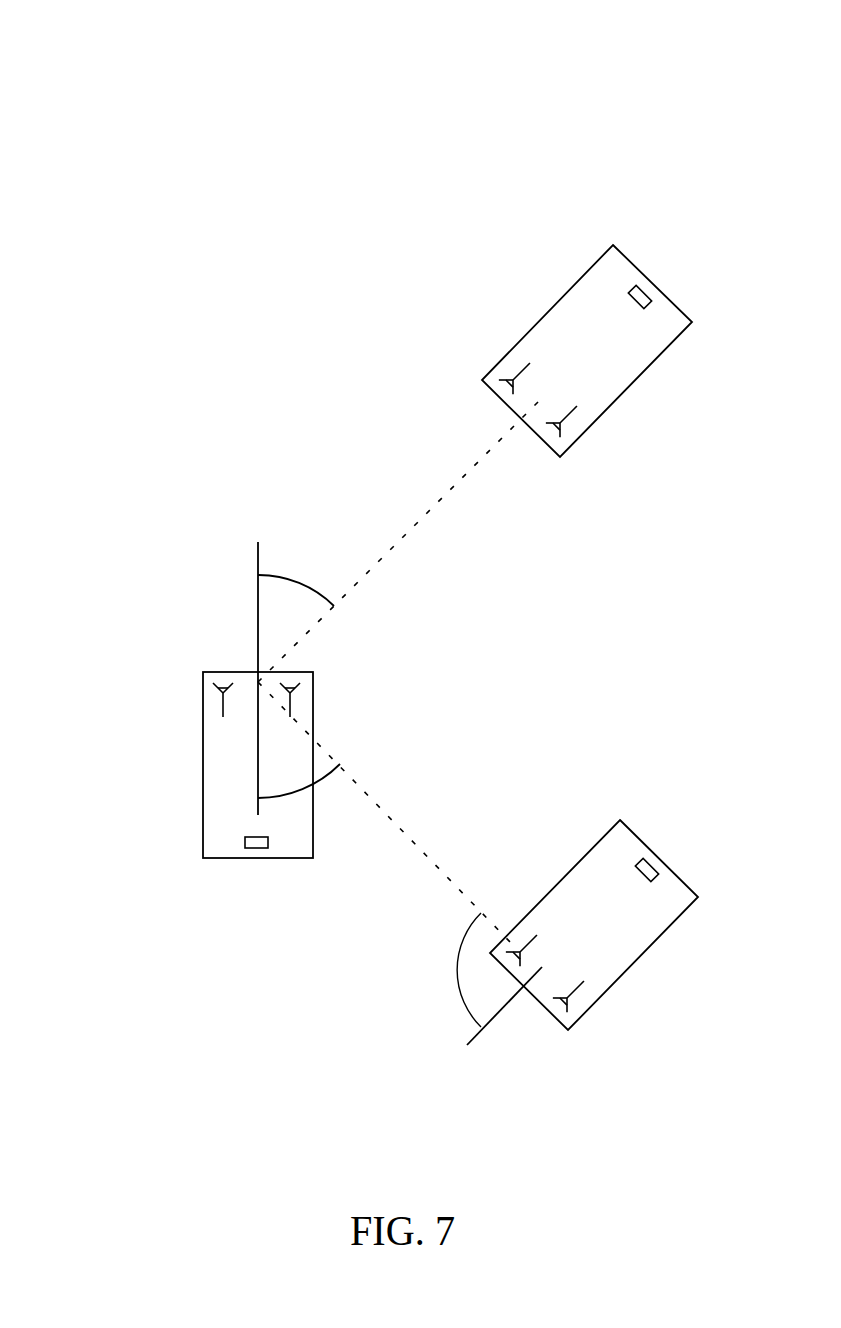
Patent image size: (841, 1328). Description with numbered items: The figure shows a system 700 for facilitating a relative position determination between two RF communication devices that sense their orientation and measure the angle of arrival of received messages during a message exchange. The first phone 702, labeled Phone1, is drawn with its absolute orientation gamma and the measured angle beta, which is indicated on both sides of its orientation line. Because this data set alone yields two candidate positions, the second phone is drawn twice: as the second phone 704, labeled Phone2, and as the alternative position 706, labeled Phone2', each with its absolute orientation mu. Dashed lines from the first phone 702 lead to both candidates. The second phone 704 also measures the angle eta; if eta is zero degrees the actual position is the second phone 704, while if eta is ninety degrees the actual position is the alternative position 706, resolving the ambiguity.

The system for facilitating a relative position determination 700 is at (147, 99).
The first phone 702 is at (203, 752).
The second phone 704 is at (542, 323).
The second possible position of the second phone 706 is at (640, 952).